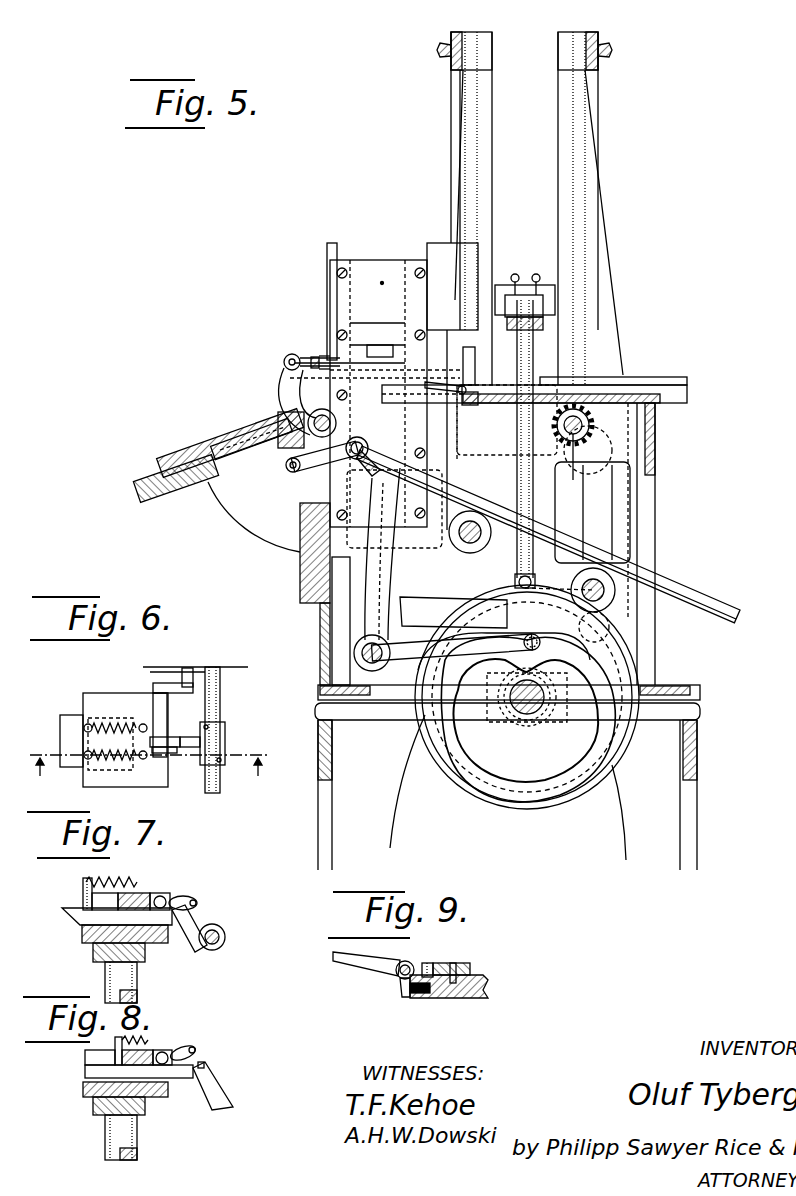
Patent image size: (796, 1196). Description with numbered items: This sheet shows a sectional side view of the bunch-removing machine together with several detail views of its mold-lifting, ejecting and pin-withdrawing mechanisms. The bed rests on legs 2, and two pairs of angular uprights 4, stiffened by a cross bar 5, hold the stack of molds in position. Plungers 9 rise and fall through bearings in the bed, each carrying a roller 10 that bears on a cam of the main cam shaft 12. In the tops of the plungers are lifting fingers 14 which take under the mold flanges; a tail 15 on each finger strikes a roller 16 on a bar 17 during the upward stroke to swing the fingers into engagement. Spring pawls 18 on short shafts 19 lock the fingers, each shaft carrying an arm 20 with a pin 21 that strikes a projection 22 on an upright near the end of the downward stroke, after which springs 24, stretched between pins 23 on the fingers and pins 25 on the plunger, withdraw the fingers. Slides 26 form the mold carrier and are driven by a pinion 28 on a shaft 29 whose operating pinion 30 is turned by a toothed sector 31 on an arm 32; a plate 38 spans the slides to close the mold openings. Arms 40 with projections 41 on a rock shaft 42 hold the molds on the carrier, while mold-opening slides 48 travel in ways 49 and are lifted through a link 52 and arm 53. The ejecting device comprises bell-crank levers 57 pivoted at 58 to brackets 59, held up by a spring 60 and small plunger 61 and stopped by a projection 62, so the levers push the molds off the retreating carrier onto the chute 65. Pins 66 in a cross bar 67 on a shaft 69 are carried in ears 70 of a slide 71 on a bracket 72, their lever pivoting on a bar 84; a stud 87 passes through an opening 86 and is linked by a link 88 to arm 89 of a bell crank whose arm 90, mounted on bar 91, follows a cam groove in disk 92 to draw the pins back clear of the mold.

In FIG. 5, the legs 2 is at (507, 777).
In FIG. 5, the angular uprights 4 is at (461, 195).
In FIG. 6, the angular uprights 4 is at (232, 667).
In FIG. 5, the cross bar 5 is at (450, 54).
In FIG. 5, the plungers 9 is at (534, 350).
In FIG. 8, the plungers 9 is at (125, 1143).
In FIG. 5, the roller 10 is at (518, 582).
In FIG. 5, the main cam shaft 12 is at (527, 700).
In FIG. 5, the lifting fingers 14 is at (527, 300).
In FIG. 6, the lifting fingers 14 is at (60, 728).
In FIG. 7, the lifting fingers 14 is at (80, 920).
In FIG. 8, the lifting fingers 14 is at (90, 1072).
In FIG. 6, the tail 15 is at (192, 750).
In FIG. 7, the tail 15 is at (195, 945).
In FIG. 8, the tail 15 is at (220, 1100).
In FIG. 6, the roller 16 is at (226, 745).
In FIG. 7, the roller 16 is at (225, 937).
In FIG. 6, the bar 17 is at (222, 697).
In FIG. 7, the bar 17 is at (215, 945).
In FIG. 6, the spring pawls 18 is at (168, 755).
In FIG. 7, the spring pawls 18 is at (168, 897).
In FIG. 8, the spring pawls 18 is at (170, 1052).
In FIG. 6, the short shafts 19 is at (150, 705).
In FIG. 6, the arm 20 is at (178, 690).
In FIG. 7, the arm 20 is at (195, 900).
In FIG. 8, the arm 20 is at (195, 1050).
In FIG. 6, the pin 21 is at (185, 672).
In FIG. 7, the pin 21 is at (196, 905).
In FIG. 8, the pin 21 is at (200, 1050).
In FIG. 8, the projection 22 is at (205, 1064).
In FIG. 6, the pins 23 is at (85, 738).
In FIG. 7, the pins 23 is at (83, 890).
In FIG. 6, the springs 24 is at (110, 752).
In FIG. 7, the springs 24 is at (115, 880).
In FIG. 6, the pins 25 is at (143, 760).
In FIG. 7, the pins 25 is at (150, 893).
In FIG. 5, the slides 26 is at (650, 380).
In FIG. 5, the pinion 28 is at (571, 465).
In FIG. 5, the shaft 29 is at (582, 425).
In FIG. 5, the operating pinion 30 is at (612, 440).
In FIG. 5, the toothed sector 31 is at (648, 460).
In FIG. 5, the arm 32 is at (592, 512).
In FIG. 5, the plate 38 is at (470, 358).
In FIG. 5, the arms 40 is at (333, 402).
In FIG. 5, the projections 41 is at (319, 357).
In FIG. 5, the rock shaft 42 is at (336, 428).
In FIG. 5, the slides 48 is at (405, 528).
In FIG. 5, the ways 49 is at (410, 262).
In FIG. 5, the link 52 is at (302, 563).
In FIG. 5, the arm 53 is at (453, 612).
In FIG. 5, the bell-crank levers 57 is at (455, 395).
In FIG. 9, the bell-crank levers 57 is at (372, 970).
In FIG. 9, the pivot 58 is at (400, 975).
In FIG. 5, the brackets 59 is at (480, 402).
In FIG. 9, the brackets 59 is at (470, 966).
In FIG. 9, the spring 60 is at (440, 998).
In FIG. 9, the small plunger 61 is at (415, 996).
In FIG. 9, the projection 62 is at (428, 965).
In FIG. 5, the chute 65 is at (680, 598).
In FIG. 5, the pins 66 is at (376, 368).
In FIG. 5, the cross bar 67 is at (314, 358).
In FIG. 5, the shaft 69 is at (288, 357).
In FIG. 5, the ears 70 is at (297, 401).
In FIG. 5, the slide 71 is at (228, 452).
In FIG. 5, the bracket 72 is at (186, 496).
In FIG. 5, the bar 84 is at (468, 528).
In FIG. 5, the opening 86 is at (236, 460).
In FIG. 5, the stud 87 is at (283, 452).
In FIG. 5, the link 88 is at (310, 468).
In FIG. 5, the arm 89 is at (398, 580).
In FIG. 5, the arm 90 is at (522, 643).
In FIG. 5, the bar 91 is at (362, 658).
In FIG. 5, the disk 92 is at (518, 810).